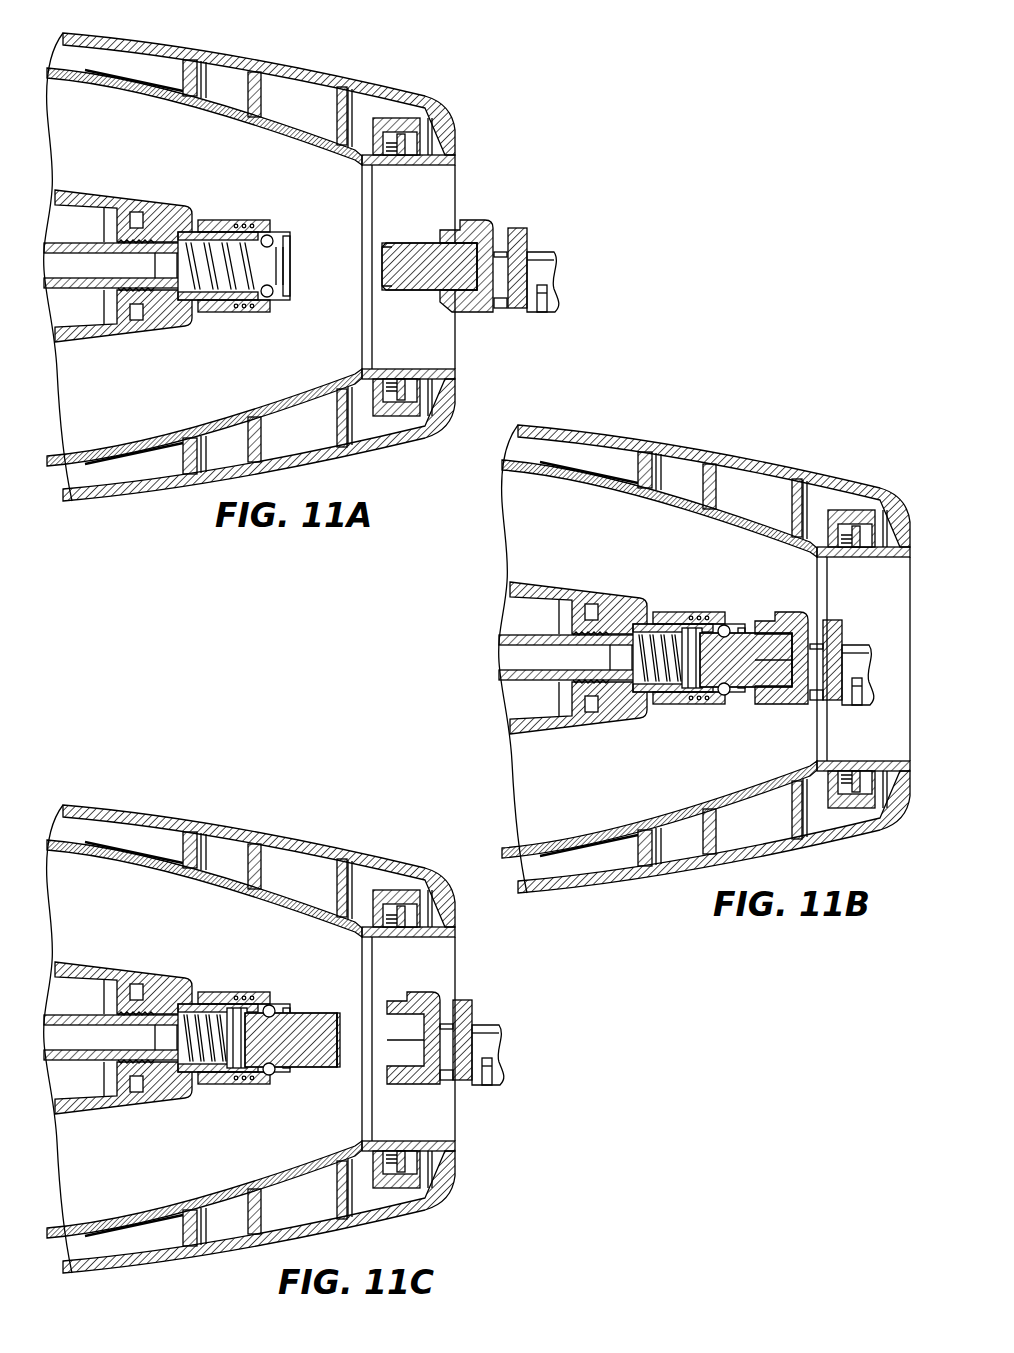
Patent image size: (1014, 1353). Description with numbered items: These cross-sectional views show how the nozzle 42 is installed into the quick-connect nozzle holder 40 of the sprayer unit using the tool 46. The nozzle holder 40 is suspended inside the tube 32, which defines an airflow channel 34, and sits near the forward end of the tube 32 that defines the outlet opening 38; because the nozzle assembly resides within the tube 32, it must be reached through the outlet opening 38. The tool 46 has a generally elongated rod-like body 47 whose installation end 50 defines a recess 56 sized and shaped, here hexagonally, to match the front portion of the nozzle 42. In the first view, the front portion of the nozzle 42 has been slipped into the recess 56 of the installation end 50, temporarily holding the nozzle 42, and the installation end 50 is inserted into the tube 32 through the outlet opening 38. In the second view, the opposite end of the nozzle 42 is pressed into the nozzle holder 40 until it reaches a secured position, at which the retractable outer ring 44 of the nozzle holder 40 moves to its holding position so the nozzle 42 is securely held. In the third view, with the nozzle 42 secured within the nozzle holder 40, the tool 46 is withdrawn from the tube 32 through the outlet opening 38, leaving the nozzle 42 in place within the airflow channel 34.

In FIG. 11A, the tube 32 is at (284, 70).
In FIG. 11B, the tube 32 is at (704, 654).
In FIG. 11C, the tube 32 is at (249, 1035).
In FIG. 11A, the airflow channel 34 is at (222, 376).
In FIG. 11B, the airflow channel 34 is at (694, 659).
In FIG. 11C, the airflow channel 34 is at (239, 1039).
In FIG. 11A, the outlet opening 38 is at (460, 334).
In FIG. 11B, the outlet opening 38 is at (891, 667).
In FIG. 11C, the outlet opening 38 is at (451, 1040).
In FIG. 11A, the quick-connect nozzle holder 40 is at (240, 196).
In FIG. 11B, the quick-connect nozzle holder 40 is at (599, 633).
In FIG. 11C, the quick-connect nozzle holder 40 is at (146, 1011).
In FIG. 11A, the nozzle 42 is at (390, 291).
In FIG. 11B, the nozzle 42 is at (740, 686).
In FIG. 11C, the nozzle 42 is at (291, 1065).
In FIG. 11A, the retractable outer ring 44 is at (243, 314).
In FIG. 11B, the retractable outer ring 44 is at (692, 682).
In FIG. 11C, the retractable outer ring 44 is at (240, 1062).
In FIG. 11A, the tool 46 is at (560, 337).
In FIG. 11B, the tool 46 is at (902, 681).
In FIG. 11C, the tool 46 is at (535, 1073).
In FIG. 11A, the rod-like body 47 is at (513, 227).
In FIG. 11B, the rod-like body 47 is at (853, 636).
In FIG. 11C, the rod-like body 47 is at (479, 1007).
In FIG. 11A, the installation end 50 is at (541, 224).
In FIG. 11B, the installation end 50 is at (883, 641).
In FIG. 11C, the installation end 50 is at (498, 1014).
In FIG. 11A, the recess 56 is at (463, 261).
In FIG. 11B, the recess 56 is at (774, 635).
In FIG. 11C, the recess 56 is at (376, 1020).